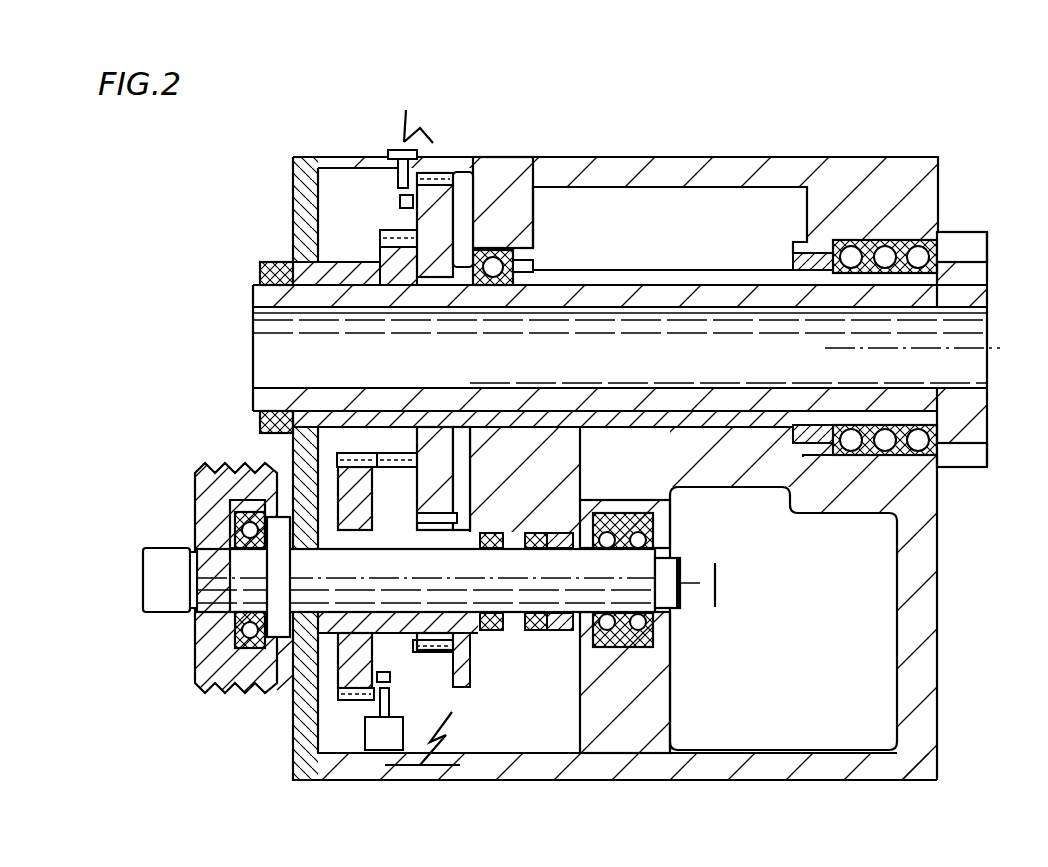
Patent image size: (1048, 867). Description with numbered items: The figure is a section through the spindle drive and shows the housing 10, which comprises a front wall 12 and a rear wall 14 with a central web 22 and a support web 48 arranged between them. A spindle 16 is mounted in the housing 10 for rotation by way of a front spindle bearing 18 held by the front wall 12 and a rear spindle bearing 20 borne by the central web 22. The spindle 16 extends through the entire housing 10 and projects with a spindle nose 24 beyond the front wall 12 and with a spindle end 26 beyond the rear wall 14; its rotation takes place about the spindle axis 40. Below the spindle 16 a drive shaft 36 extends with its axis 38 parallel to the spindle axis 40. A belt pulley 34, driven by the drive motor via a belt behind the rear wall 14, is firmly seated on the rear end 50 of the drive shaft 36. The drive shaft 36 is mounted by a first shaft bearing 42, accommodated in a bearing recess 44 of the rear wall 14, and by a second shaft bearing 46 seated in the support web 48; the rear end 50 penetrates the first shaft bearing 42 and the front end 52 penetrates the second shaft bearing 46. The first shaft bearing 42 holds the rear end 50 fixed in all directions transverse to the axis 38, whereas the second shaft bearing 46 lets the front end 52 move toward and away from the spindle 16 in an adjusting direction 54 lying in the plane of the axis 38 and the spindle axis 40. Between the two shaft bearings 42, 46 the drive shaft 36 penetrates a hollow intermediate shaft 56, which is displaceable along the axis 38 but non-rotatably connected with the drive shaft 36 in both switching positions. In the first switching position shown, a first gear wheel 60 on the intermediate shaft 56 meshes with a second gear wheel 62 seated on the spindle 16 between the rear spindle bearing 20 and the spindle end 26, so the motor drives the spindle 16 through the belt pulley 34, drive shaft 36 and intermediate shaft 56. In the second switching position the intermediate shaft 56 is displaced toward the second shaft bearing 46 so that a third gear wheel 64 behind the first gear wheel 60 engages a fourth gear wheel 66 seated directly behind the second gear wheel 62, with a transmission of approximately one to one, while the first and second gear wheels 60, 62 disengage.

The housing 10 is at (670, 157).
The front wall 12 is at (928, 635).
The rear wall 14 is at (290, 752).
The spindle 16 is at (984, 260).
The front spindle bearing 18 is at (913, 243).
The rear spindle bearing 20 is at (550, 247).
The central web 22 is at (503, 222).
The spindle nose 24 is at (978, 420).
The spindle end 26 is at (258, 394).
The belt pulley 34 is at (193, 685).
The drive shaft 36 is at (480, 630).
The axis 38 is at (600, 530).
The spindle axis 40 is at (997, 332).
The first shaft bearing 42 is at (213, 635).
The bearing recess 44 is at (267, 692).
The second shaft bearing 46 is at (672, 612).
The support web 48 is at (640, 690).
The rear end 50 is at (203, 567).
The front end 52 is at (670, 560).
The adjusting direction 54 is at (720, 583).
The intermediate shaft 56 is at (472, 528).
The first gear wheel 60 is at (467, 633).
The second gear wheel 62 is at (440, 193).
The third gear wheel 64 is at (345, 700).
The fourth gear wheel 66 is at (393, 223).